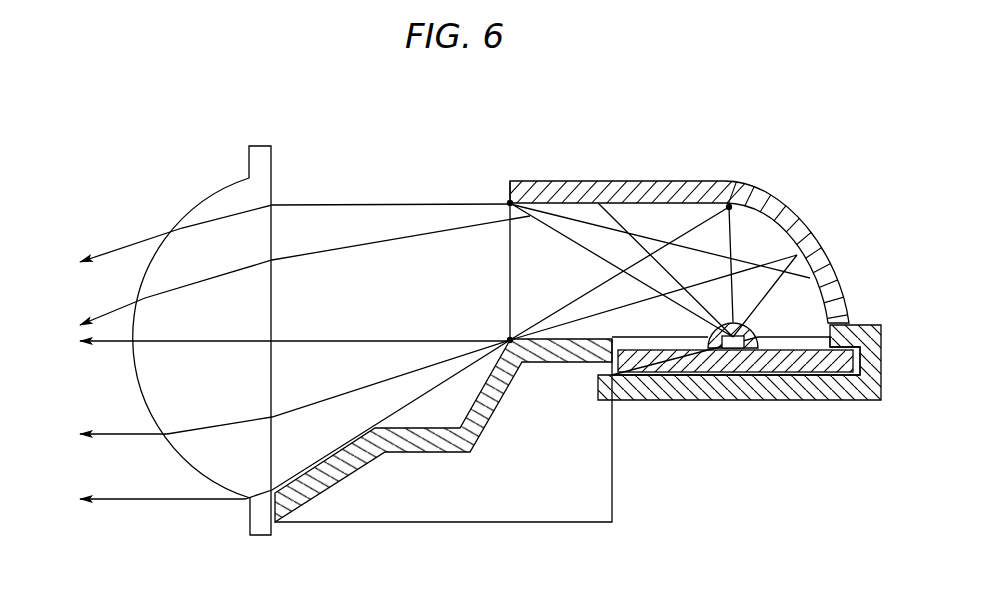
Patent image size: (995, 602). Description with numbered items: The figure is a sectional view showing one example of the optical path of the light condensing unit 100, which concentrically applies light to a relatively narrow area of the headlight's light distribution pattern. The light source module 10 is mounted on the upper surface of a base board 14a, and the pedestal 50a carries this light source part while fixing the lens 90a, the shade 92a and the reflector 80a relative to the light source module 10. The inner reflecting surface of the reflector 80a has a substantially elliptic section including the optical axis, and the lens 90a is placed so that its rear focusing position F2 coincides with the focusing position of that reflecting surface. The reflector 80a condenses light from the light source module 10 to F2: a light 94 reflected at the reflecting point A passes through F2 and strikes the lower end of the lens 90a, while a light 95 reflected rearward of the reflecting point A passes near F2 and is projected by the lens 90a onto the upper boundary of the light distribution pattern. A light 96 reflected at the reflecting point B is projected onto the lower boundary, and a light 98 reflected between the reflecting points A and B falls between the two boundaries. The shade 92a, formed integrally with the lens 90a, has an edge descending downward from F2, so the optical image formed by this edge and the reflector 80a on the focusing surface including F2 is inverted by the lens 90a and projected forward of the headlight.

The light condensing unit 100 is at (762, 116).
The reflector 80a is at (648, 181).
The shade 92a is at (492, 407).
The pedestal 50a is at (735, 401).
The base board 14a is at (770, 338).
The light source module 10 is at (712, 336).
The lens 90a is at (272, 308).
The light 96 is at (120, 248).
The light 98 is at (112, 308).
The light 95 is at (115, 431).
The light 94 is at (118, 503).
The reflecting point B is at (506, 202).
The reflecting point A is at (745, 200).
The focusing position F2 is at (506, 337).